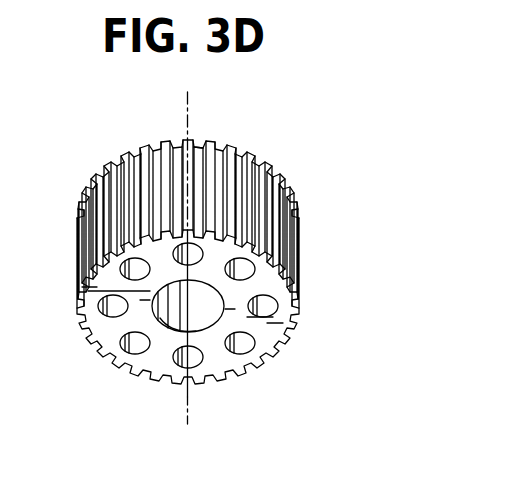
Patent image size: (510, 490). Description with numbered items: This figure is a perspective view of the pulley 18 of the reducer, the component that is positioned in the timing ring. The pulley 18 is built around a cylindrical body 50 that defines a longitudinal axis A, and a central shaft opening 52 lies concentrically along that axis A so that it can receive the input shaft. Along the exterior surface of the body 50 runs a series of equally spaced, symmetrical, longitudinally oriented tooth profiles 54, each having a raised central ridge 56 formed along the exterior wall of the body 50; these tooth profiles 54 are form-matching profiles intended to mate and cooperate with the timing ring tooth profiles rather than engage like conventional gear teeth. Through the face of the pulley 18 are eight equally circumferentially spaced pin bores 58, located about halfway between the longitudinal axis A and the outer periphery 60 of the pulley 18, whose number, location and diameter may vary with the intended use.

The pulley 18 is at (137, 172).
The cylindrical body 50 is at (296, 226).
The shaft opening 52 is at (167, 318).
The tooth profiles 54 is at (167, 143).
The raised central ridge 56 is at (207, 144).
The pin bores 58 is at (116, 305).
The outer periphery 60 is at (105, 246).
The longitudinal axis A is at (188, 403).